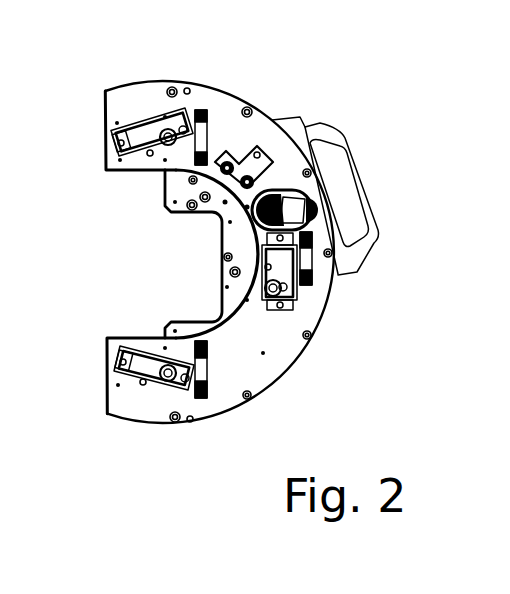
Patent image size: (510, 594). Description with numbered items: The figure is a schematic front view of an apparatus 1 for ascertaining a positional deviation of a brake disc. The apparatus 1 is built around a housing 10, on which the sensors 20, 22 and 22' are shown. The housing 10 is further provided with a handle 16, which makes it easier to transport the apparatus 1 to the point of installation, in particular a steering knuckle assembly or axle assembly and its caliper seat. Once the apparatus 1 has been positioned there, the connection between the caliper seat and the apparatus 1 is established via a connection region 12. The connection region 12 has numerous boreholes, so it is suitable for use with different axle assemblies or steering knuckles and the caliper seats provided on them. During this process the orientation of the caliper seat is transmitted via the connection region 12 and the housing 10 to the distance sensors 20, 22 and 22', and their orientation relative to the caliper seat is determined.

The apparatus 1 is at (267, 78).
The housing 10 is at (288, 345).
The connection region 12 is at (168, 323).
The handle 16 is at (353, 167).
The sensor 20 is at (283, 273).
The sensor 22 is at (118, 128).
The sensor 22' is at (140, 419).